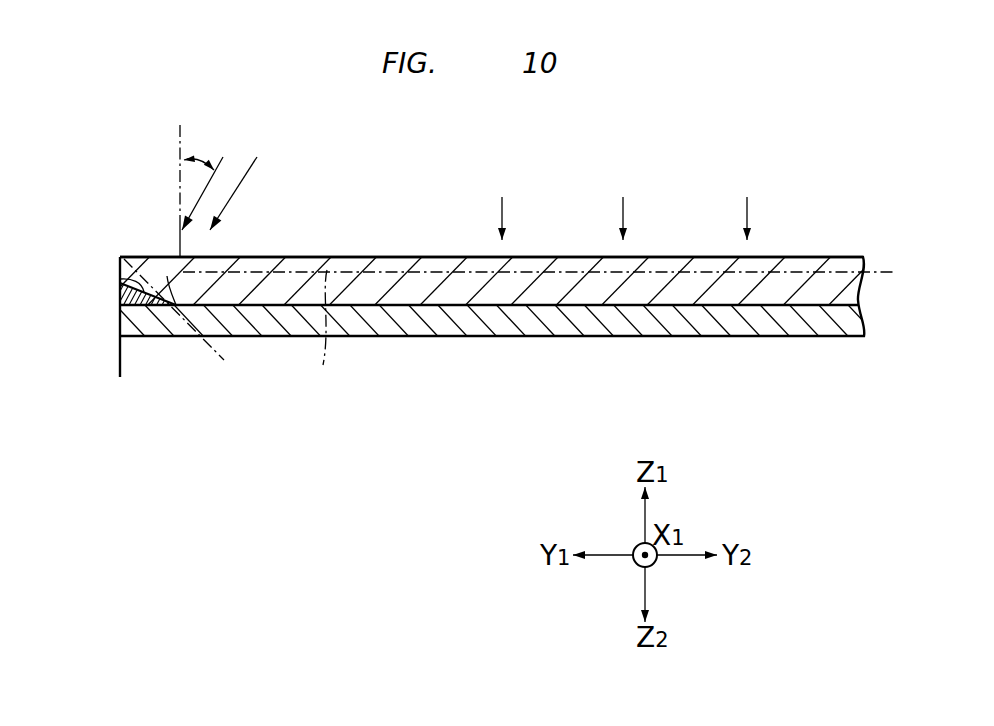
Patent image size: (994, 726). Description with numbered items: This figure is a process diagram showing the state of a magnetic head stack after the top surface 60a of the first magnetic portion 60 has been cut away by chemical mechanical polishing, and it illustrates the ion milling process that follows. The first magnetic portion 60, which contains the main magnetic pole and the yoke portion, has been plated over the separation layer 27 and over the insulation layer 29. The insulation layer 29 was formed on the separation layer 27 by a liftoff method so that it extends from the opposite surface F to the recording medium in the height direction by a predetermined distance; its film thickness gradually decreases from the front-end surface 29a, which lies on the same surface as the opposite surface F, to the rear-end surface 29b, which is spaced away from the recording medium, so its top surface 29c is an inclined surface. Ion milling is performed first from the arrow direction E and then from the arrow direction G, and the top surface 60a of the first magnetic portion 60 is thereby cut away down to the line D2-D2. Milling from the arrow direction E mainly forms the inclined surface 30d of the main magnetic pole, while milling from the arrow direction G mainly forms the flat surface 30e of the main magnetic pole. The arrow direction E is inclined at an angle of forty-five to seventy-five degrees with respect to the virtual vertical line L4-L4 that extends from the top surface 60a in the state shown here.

The first magnetic portion 60 is at (360, 257).
The top surface of the first magnetic portion 60a is at (402, 257).
The separation layer 27 is at (120, 320).
The insulation layer 29 is at (125, 348).
The front-end surface 29a is at (120, 297).
The rear-end surface 29b is at (176, 305).
The top surface of the insulation layer 29c is at (120, 278).
The inclined surface of the main magnetic pole 30d is at (197, 329).
The flat surface of the main magnetic pole 30e is at (333, 334).
The line D2- D2 is at (119, 256).
The virtual vertical line L4- L4 is at (173, 178).
The arrow direction E is at (228, 181).
The arrow direction G is at (625, 202).
The opposite surface to the recording medium F is at (118, 365).